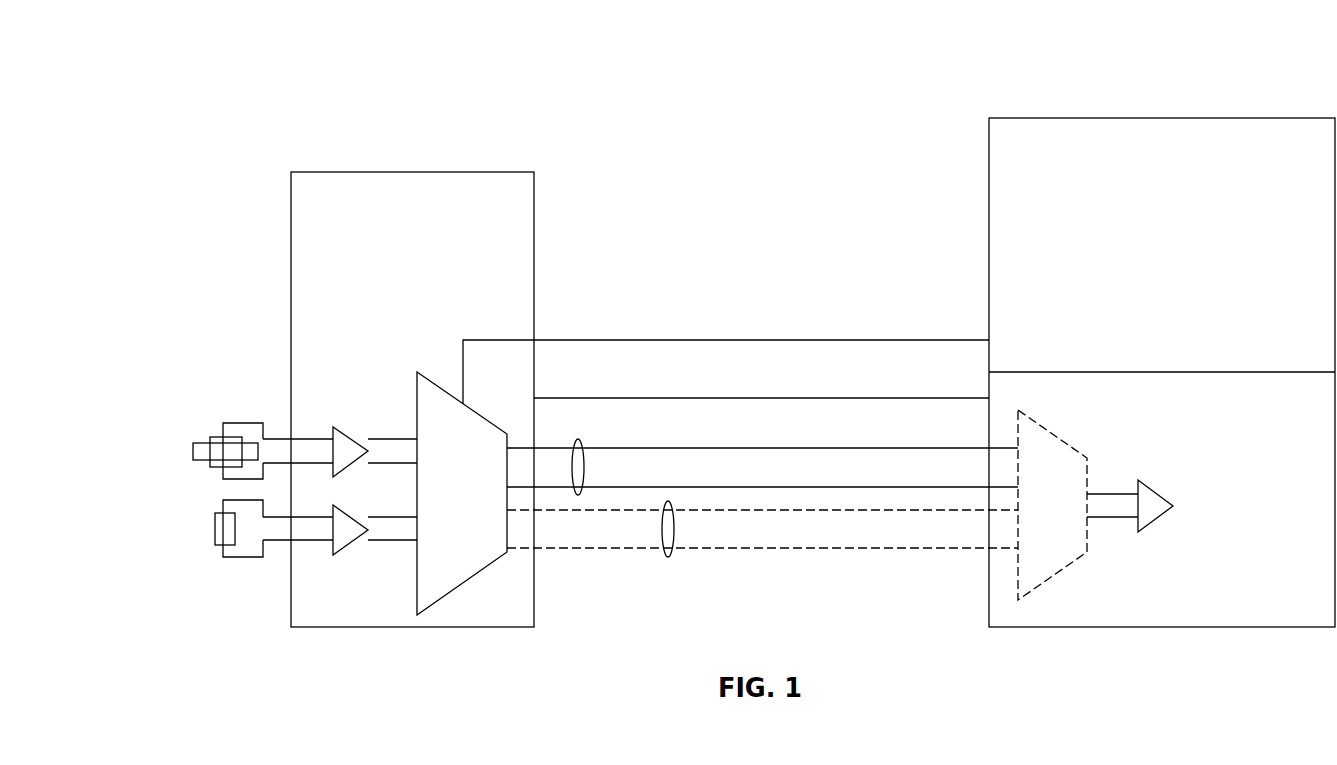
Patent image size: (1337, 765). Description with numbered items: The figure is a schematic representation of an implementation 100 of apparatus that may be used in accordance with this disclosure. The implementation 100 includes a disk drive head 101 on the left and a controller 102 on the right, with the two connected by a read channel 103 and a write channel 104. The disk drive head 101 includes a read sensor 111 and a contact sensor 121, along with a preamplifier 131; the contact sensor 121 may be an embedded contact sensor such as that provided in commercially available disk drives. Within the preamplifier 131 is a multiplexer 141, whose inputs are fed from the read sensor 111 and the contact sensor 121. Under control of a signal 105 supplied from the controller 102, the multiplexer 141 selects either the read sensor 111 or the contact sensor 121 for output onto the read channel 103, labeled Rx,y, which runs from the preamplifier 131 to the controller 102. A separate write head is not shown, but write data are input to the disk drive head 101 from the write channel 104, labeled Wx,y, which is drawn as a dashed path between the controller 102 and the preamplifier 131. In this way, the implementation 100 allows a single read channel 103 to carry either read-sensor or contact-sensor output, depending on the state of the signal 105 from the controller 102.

The implementation 100 is at (281, 77).
The disk drive head 101 is at (549, 220).
The controller 102 is at (965, 222).
The read channel 103 is at (578, 495).
The write channel 104 is at (668, 557).
The signal 105 is at (546, 337).
The read sensor 111 is at (221, 436).
The contact sensor 121 is at (221, 546).
The preamplifier 131 is at (360, 170).
The multiplexer 141 is at (432, 378).